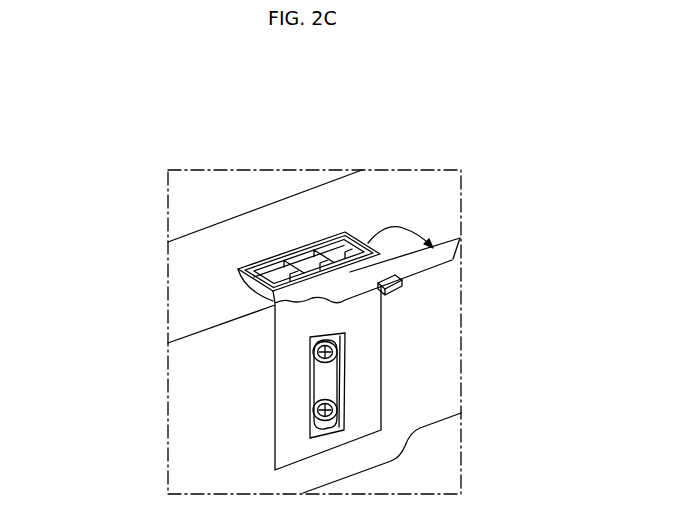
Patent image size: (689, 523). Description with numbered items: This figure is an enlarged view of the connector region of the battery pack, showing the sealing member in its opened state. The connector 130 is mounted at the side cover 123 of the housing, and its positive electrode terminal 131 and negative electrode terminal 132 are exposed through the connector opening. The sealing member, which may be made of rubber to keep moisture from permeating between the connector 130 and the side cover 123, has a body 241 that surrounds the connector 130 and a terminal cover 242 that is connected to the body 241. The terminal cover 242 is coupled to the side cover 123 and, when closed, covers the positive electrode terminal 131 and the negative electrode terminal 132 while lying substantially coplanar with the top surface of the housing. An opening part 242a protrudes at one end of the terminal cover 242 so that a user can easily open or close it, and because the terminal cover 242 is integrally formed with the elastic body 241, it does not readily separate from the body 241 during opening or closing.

The side cover 123 is at (188, 359).
The connector 130 is at (262, 248).
The positive electrode terminal 131 is at (334, 258).
The negative electrode terminal 132 is at (284, 272).
The body 241 is at (287, 374).
The terminal cover 242 is at (450, 259).
The opening part 242a is at (393, 289).